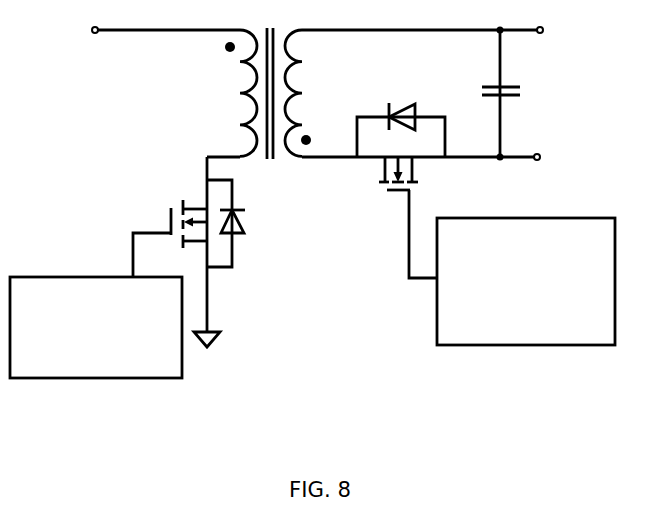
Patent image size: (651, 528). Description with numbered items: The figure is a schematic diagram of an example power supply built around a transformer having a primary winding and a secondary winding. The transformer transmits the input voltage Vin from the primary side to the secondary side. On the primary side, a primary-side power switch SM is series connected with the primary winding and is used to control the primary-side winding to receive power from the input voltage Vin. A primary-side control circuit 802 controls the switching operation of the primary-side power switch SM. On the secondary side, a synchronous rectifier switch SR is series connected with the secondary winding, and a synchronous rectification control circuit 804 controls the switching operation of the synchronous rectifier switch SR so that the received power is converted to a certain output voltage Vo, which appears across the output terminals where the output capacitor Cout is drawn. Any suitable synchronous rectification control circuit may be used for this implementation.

The primary-side control circuit 802 is at (96, 327).
The synchronous rectification control circuit 804 is at (526, 281).
The primary-side power switch SM is at (191, 207).
The synchronous rectifier switch SR is at (392, 183).
The output capacitor Cout is at (488, 93).
The input voltage Vin is at (149, 29).
The output voltage Vo is at (540, 93).